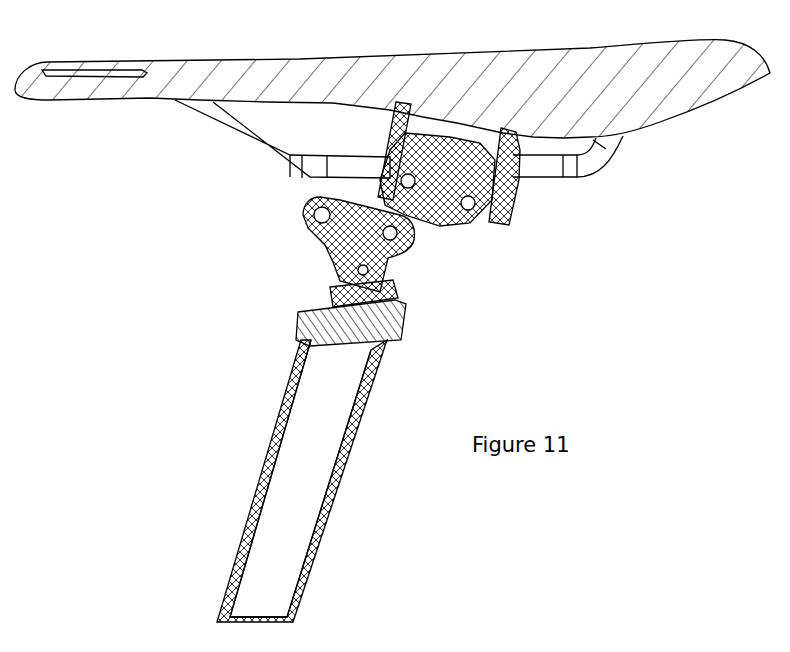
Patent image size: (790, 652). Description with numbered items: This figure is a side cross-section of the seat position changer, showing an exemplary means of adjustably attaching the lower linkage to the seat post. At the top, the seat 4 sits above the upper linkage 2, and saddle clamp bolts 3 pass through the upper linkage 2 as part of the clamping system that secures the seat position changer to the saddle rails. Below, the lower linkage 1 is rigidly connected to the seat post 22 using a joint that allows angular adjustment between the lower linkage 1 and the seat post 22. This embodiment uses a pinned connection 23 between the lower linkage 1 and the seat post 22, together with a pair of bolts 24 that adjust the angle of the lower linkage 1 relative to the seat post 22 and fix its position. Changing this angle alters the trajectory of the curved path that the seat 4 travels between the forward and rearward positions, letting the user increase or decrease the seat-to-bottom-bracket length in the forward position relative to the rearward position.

The lower linkage 1 is at (328, 245).
The upper linkage 2 is at (467, 225).
The saddle clamp bolts 3 is at (503, 190).
The seat 4 is at (703, 108).
The seat post 22 is at (277, 420).
The pinned connection 23 is at (398, 288).
The bolts 24 is at (300, 312).